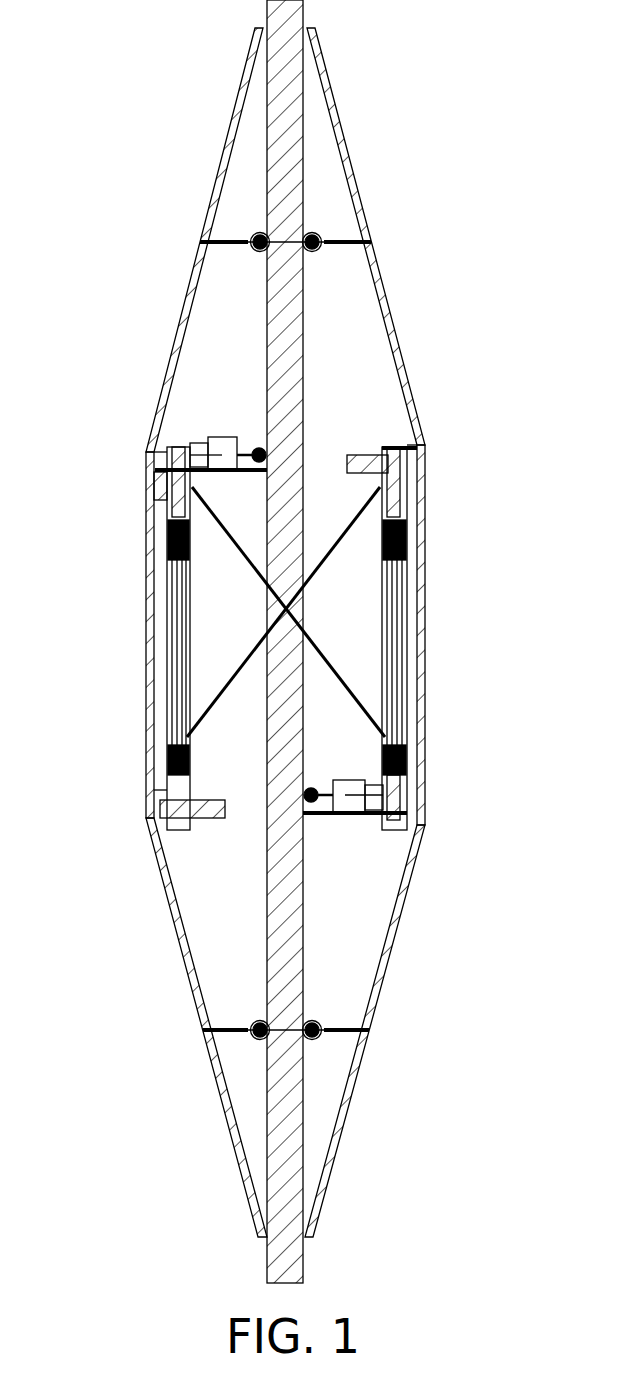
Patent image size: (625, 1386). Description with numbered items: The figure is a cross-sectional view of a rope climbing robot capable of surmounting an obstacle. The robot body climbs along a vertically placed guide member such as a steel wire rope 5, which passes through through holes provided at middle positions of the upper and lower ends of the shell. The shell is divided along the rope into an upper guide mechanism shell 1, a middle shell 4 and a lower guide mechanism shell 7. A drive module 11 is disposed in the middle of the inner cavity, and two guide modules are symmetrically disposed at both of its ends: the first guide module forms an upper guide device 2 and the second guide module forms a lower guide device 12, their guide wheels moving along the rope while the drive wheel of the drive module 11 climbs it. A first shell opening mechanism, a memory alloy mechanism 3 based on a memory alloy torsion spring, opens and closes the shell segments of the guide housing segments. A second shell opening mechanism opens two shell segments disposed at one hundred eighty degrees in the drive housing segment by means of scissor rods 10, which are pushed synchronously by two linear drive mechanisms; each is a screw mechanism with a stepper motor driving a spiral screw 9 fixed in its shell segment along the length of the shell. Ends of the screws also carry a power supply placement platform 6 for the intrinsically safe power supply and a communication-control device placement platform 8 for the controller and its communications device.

The upper guide mechanism shell 1 is at (240, 80).
The upper guide device 2 is at (206, 242).
The memory alloy mechanism 3 is at (158, 440).
The middle shell 4 is at (147, 627).
The steel wire rope 5 is at (267, 698).
The power supply placement platform 6 is at (152, 795).
The lower guide mechanism shell 7 is at (170, 915).
The communication-control device placement platform 8 is at (416, 442).
The spiral screw 9 is at (404, 536).
The scissor rods 10 is at (332, 670).
The drive module 11 is at (400, 770).
The lower guide device 12 is at (318, 1025).